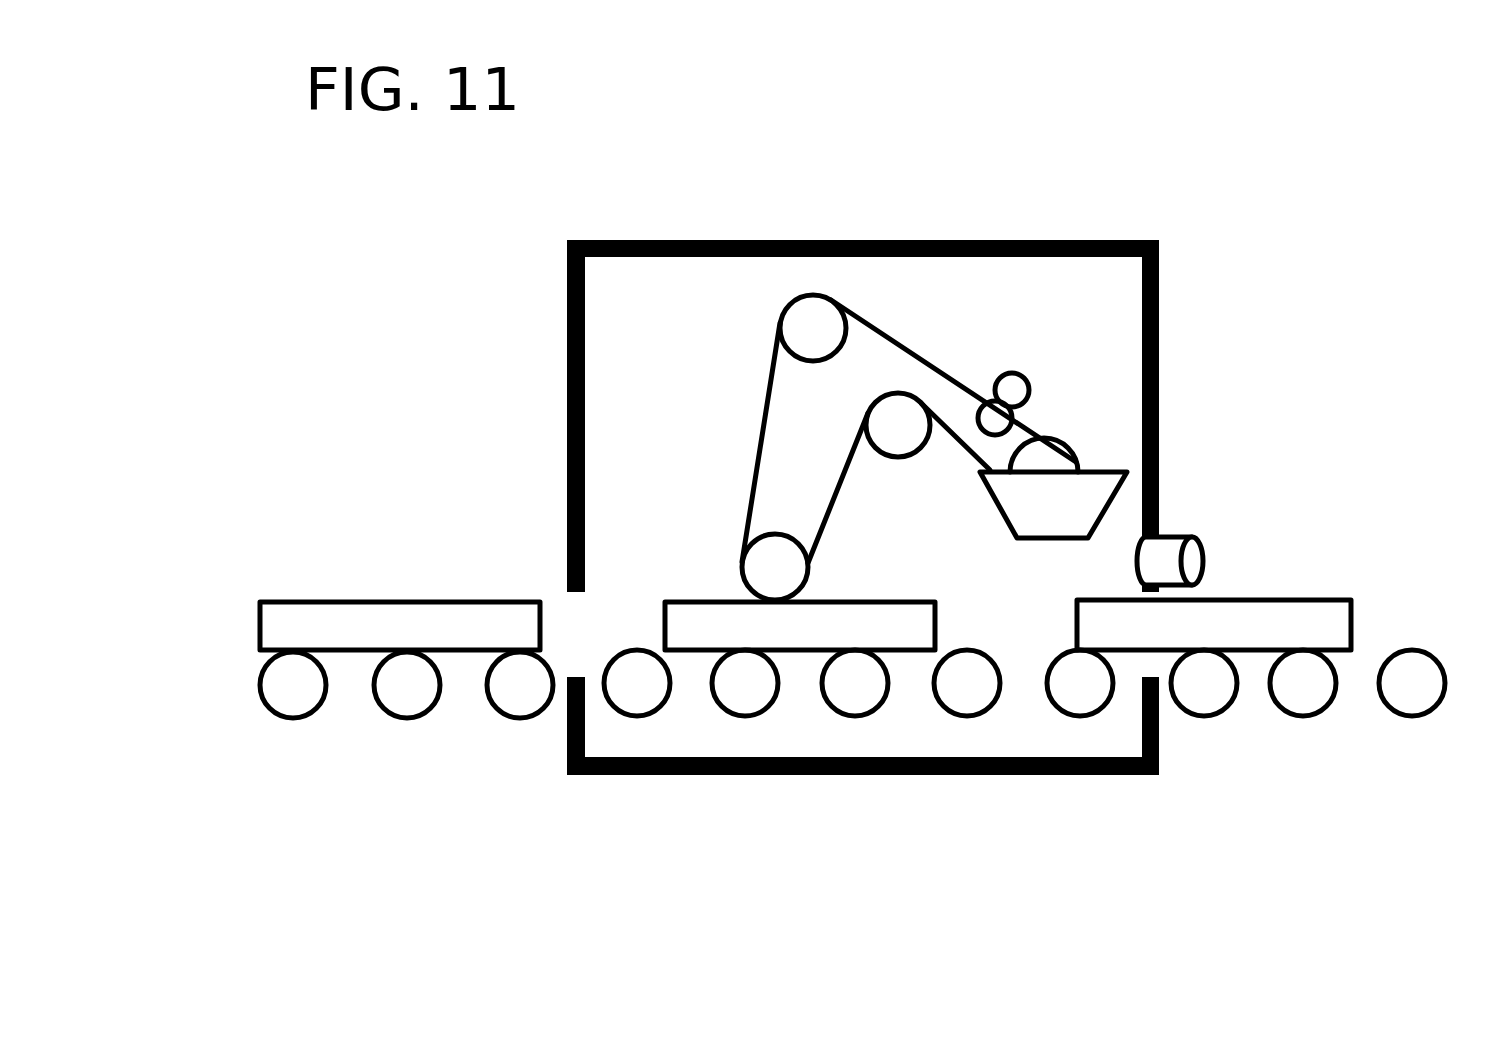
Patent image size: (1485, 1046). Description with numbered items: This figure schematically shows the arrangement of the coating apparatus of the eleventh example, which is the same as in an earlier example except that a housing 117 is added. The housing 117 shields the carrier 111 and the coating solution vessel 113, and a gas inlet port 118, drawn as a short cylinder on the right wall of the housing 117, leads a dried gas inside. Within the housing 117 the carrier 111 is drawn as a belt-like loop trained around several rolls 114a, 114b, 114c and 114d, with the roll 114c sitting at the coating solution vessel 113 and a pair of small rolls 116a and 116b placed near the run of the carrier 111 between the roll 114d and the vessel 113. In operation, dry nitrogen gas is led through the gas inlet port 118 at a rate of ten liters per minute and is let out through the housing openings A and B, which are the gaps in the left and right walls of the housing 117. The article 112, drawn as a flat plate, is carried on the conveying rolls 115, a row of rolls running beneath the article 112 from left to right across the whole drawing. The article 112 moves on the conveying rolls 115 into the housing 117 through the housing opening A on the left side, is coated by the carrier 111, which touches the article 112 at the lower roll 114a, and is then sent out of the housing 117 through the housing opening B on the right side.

The carrier 111 is at (757, 460).
The article 112 is at (398, 622).
The coating solution vessel 113 is at (1088, 512).
The roller 114a is at (763, 580).
The roller 114b is at (908, 435).
The roller 114c is at (1053, 458).
The roller 114d is at (807, 330).
The conveying rolls 115 is at (635, 693).
The nip roller 116a is at (1068, 363).
The nip roller 116b is at (990, 420).
The housing 117 is at (1159, 277).
The gas inlet port 118 is at (1173, 564).
The housing opening A is at (570, 630).
The housing opening B is at (1160, 662).